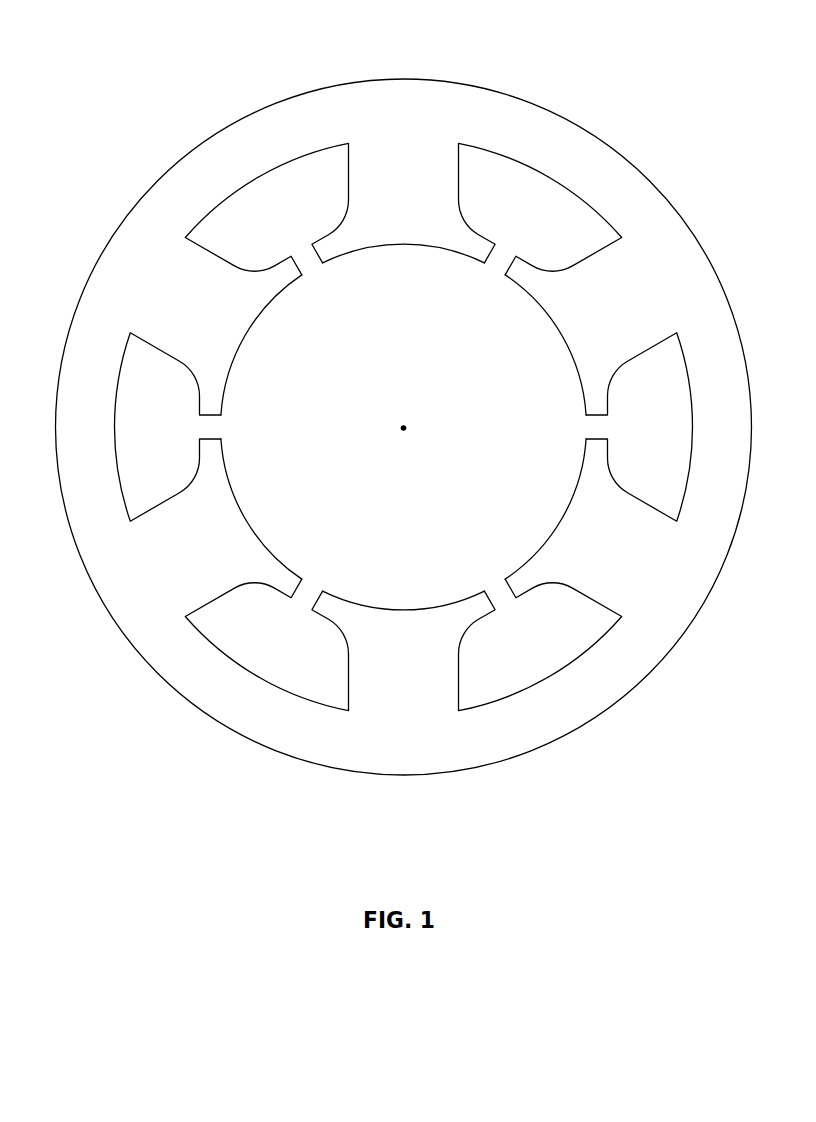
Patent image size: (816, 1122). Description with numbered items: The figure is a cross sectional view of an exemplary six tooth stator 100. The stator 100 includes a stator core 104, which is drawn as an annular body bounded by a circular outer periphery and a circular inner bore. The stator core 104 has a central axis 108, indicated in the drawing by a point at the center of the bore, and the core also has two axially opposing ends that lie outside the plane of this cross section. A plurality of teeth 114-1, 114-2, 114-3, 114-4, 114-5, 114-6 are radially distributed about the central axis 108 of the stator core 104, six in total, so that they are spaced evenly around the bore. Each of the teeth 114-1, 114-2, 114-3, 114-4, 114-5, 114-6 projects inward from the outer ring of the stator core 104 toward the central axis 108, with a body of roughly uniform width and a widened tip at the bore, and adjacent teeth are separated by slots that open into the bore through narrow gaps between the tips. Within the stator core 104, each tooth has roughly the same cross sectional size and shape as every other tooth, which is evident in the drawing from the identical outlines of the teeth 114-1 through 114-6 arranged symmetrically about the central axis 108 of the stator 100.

The stator 100 is at (118, 40).
The stator core 104 is at (111, 240).
The central axis 108 is at (405, 430).
The tooth 114-1 is at (403, 203).
The tooth 114-2 is at (598, 302).
The tooth 114-3 is at (598, 552).
The tooth 114-4 is at (403, 651).
The tooth 114-5 is at (208, 552).
The tooth 114-6 is at (208, 302).